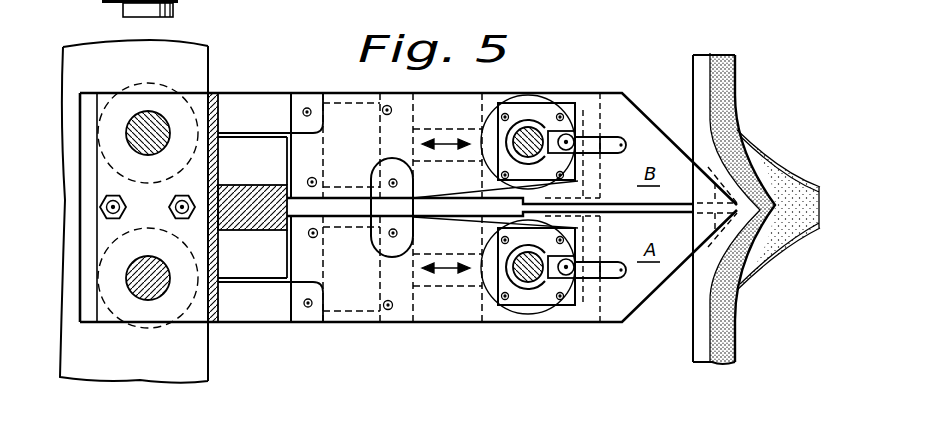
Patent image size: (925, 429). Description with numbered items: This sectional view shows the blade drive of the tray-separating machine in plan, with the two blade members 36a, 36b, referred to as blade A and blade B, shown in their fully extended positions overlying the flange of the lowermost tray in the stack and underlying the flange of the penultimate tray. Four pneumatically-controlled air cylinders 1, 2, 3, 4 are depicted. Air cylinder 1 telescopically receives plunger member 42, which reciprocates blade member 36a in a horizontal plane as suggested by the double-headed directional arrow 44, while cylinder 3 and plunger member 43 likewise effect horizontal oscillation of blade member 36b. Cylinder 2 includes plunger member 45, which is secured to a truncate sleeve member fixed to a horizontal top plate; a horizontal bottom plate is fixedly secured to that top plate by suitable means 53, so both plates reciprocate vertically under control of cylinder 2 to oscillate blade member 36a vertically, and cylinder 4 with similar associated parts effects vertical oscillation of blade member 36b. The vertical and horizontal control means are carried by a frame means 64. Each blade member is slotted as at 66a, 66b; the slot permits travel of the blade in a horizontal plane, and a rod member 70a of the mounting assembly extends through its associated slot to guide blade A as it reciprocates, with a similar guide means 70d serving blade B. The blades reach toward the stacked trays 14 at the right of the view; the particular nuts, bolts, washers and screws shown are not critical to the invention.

The air cylinder 1 is at (392, 323).
The air cylinder 2 is at (555, 312).
The air cylinder 3 is at (391, 92).
The air cylinder 4 is at (545, 93).
The workpiece fixture (wheel rim) 14 is at (757, 141).
The blade member 36a is at (652, 308).
The blade member 36b is at (652, 107).
The plunger member 42 is at (437, 288).
The plunger member 43 is at (422, 168).
The double-headed directional arrow 44 is at (446, 146).
The plunger member 45 is at (528, 130).
The suitable means 53 is at (248, 270).
The frame means 64 is at (216, 167).
The slot 66a is at (600, 277).
The slot 66b is at (612, 139).
The rod member 70a is at (583, 278).
The upper nut 70d is at (572, 140).